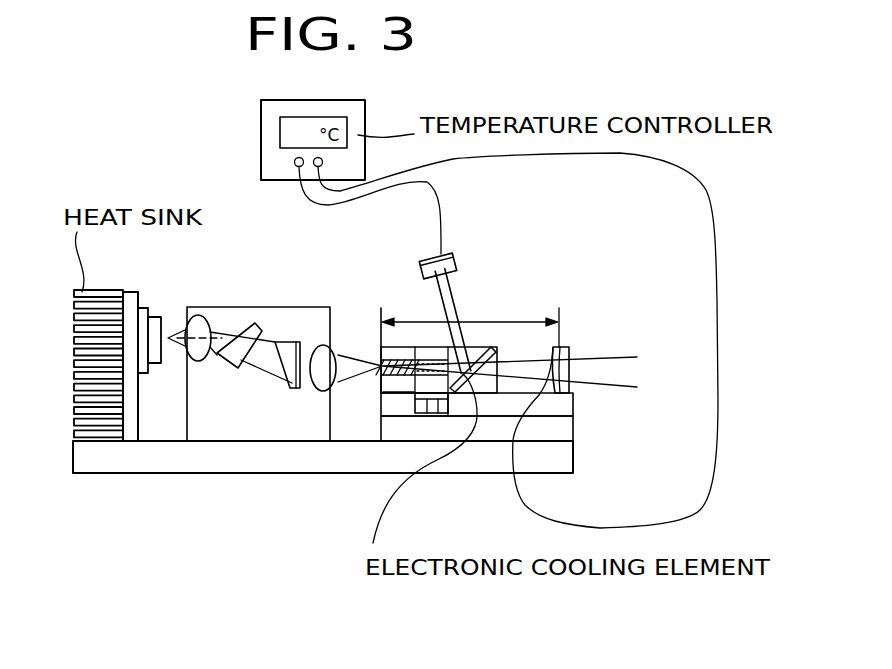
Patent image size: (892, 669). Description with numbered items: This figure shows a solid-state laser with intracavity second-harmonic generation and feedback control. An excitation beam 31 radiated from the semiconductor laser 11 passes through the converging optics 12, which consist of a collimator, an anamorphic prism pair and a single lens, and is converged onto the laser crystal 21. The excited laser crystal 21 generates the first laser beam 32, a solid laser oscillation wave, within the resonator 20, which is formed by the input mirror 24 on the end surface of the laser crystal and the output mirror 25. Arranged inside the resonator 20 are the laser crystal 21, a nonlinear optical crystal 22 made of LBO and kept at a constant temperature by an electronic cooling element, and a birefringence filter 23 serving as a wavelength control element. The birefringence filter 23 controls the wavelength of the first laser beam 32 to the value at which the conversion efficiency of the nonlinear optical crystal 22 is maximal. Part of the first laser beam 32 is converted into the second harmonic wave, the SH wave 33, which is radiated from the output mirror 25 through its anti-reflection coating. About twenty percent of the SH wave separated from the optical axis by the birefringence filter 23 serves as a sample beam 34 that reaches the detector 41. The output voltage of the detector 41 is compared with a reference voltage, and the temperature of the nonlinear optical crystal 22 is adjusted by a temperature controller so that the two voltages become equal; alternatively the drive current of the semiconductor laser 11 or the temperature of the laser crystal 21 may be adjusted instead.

The semiconductor laser 11 is at (157, 317).
The converging optics 12 is at (310, 316).
The resonator 20 is at (487, 322).
The laser crystal 21 is at (398, 380).
The nonlinear optical crystal 22 is at (418, 380).
The birefringence filter 23 is at (422, 413).
The input mirror 24 is at (383, 375).
The output mirror 25 is at (450, 394).
The excitation beam 31 is at (347, 363).
The first laser beam 32 is at (623, 330).
The SH wave 33 is at (553, 348).
The sample beam 34 is at (463, 292).
The detector 41 is at (457, 265).